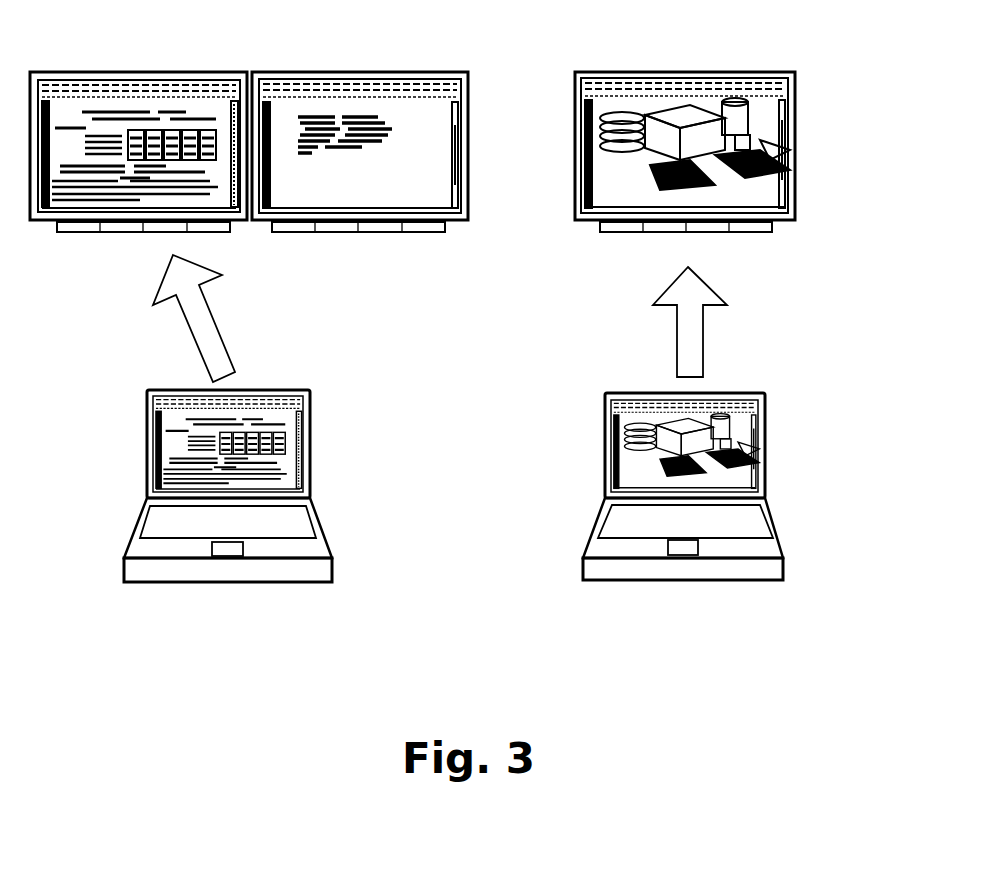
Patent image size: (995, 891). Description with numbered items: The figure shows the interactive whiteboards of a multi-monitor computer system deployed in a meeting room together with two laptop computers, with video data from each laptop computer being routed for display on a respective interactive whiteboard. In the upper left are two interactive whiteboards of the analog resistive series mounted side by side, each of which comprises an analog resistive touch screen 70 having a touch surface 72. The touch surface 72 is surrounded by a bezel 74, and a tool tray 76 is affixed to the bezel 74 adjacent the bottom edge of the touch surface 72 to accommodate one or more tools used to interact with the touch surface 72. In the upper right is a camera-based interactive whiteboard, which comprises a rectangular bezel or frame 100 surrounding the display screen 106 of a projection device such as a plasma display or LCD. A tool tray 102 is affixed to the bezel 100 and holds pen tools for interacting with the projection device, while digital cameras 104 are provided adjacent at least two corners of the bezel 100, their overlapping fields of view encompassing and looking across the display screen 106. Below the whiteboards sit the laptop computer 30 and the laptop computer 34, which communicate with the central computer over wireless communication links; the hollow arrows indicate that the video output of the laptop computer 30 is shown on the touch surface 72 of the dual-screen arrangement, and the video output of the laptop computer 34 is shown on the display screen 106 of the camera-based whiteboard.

The laptop computer 30 is at (256, 598).
The laptop computer 34 is at (705, 597).
The analog resistive touch screen 70 is at (283, 163).
The touch surface 72 is at (69, 117).
The bezel 74 is at (466, 160).
The tool tray 76 is at (123, 230).
The bezel 100 is at (726, 153).
The tool tray 102 is at (627, 227).
The digital cameras 104 is at (796, 72).
The display screen 106 is at (766, 127).